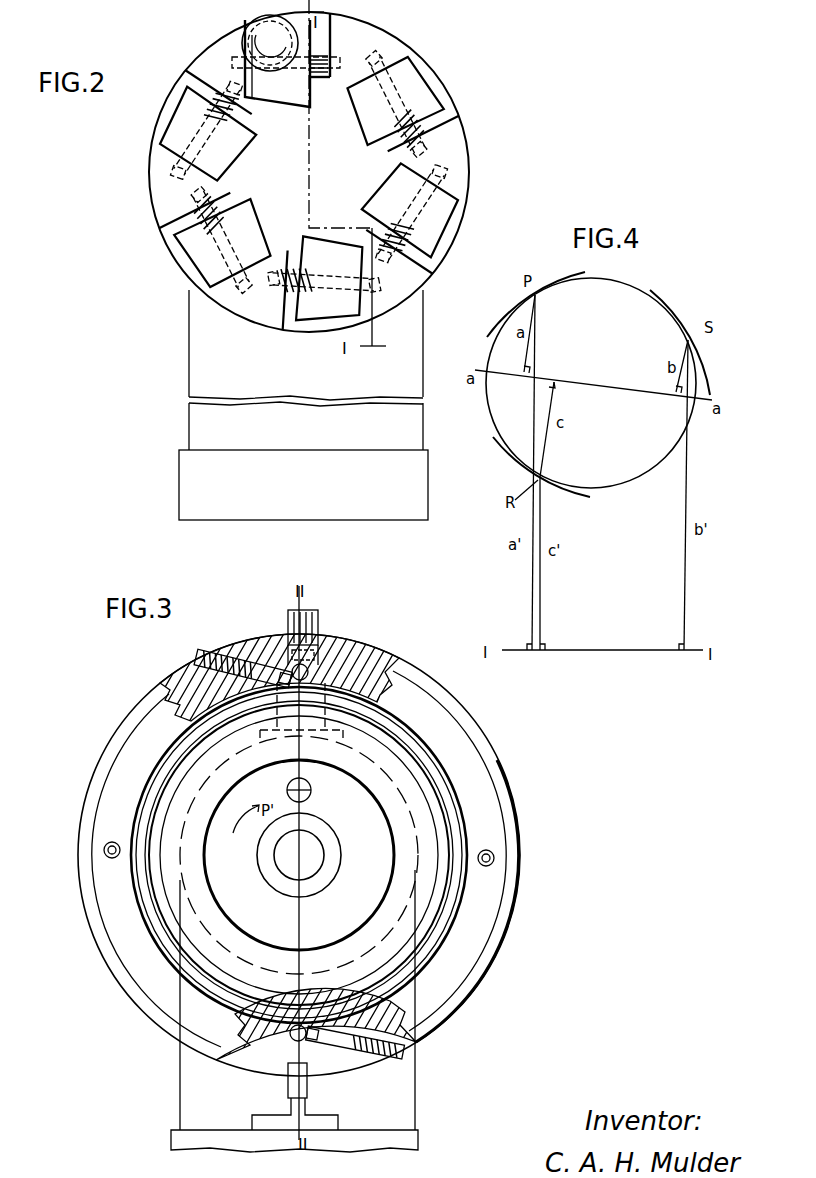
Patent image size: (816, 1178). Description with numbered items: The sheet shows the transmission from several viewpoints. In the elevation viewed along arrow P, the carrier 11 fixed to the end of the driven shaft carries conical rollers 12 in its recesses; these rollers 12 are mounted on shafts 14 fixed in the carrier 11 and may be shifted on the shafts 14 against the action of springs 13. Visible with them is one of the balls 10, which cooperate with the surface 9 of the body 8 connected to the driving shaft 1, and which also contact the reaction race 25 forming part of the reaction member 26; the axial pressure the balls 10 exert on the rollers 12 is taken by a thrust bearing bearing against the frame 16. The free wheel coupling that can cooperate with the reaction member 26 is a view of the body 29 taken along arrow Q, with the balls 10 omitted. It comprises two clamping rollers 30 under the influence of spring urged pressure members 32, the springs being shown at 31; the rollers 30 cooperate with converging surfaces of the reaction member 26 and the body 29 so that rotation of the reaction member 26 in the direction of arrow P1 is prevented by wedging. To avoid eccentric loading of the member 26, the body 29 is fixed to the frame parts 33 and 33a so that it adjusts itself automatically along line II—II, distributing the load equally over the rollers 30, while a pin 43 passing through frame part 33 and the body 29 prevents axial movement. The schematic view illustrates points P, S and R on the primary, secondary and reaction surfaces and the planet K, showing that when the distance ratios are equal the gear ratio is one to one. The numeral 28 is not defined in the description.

In FIG. 3, the driving shaft 1 is at (283, 867).
In FIG. 3, the body 8 is at (210, 810).
In FIG. 3, the surface 9 is at (190, 773).
In FIG. 2, the balls 10 is at (268, 18).
In FIG. 2, the carrier 11 is at (456, 142).
In FIG. 2, the conical rollers 12 is at (412, 78).
In FIG. 2, the springs 13 is at (320, 76).
In FIG. 2, the shafts 14 is at (440, 99).
In FIG. 2, the frame 16 is at (205, 352).
In FIG. 3, the reaction race 25 is at (413, 748).
In FIG. 3, the reaction member 26 is at (457, 790).
In FIG. 3, the housing base 28 is at (417, 870).
In FIG. 3, the body 29 is at (512, 854).
In FIG. 3, the clamping rollers 30 is at (330, 648).
In FIG. 3, the springs 31 is at (240, 652).
In FIG. 3, the pressure members 32 is at (272, 648).
In FIG. 3, the frame part 33 is at (310, 622).
In FIG. 3, the frame part 33a is at (290, 1105).
In FIG. 3, the pin 43 is at (327, 634).